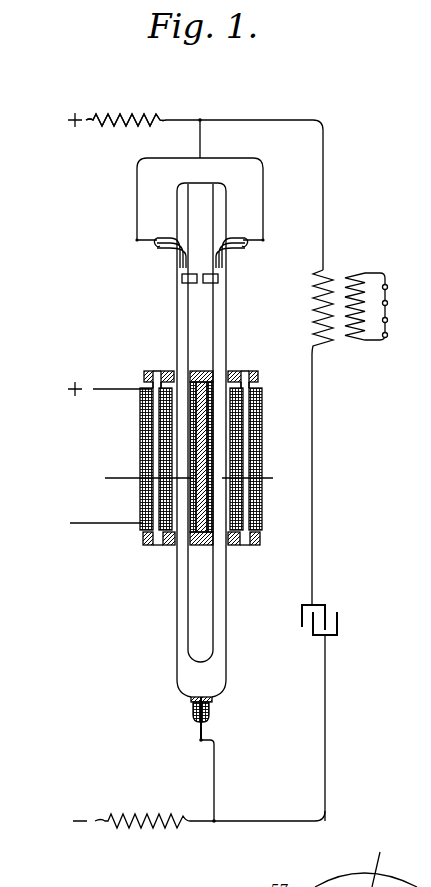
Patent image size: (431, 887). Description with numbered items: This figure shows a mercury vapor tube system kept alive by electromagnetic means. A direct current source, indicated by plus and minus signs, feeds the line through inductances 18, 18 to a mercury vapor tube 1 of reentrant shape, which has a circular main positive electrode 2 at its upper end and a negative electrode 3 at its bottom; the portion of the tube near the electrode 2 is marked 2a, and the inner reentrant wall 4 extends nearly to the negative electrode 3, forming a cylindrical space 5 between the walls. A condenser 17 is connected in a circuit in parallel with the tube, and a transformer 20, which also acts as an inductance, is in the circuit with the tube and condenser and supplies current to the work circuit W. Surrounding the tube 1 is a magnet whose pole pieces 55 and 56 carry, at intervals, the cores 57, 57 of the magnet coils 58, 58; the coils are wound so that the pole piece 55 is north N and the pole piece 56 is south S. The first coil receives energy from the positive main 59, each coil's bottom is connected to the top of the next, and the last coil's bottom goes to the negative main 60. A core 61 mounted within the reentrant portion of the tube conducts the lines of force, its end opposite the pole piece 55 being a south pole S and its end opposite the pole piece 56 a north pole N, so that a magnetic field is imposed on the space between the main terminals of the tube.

The mercury vapor tube 1 is at (227, 322).
The main positive electrode 2 is at (218, 278).
The electrode portions 2a is at (184, 482).
The negative electrode 3 is at (195, 701).
The inner tube 4 is at (200, 423).
The cylindrical space 5 is at (200, 294).
The condenser 17 is at (332, 713).
The inductances 18 is at (199, 472).
The transformer 20 is at (331, 430).
The winding W is at (380, 306).
The pole piece 55 is at (148, 370).
The pole piece 56 is at (150, 546).
The cores 57 is at (272, 388).
The magnet coils 58 is at (274, 435).
The positive main 59 is at (108, 393).
The negative main 60 is at (105, 526).
The core 61 is at (205, 370).
The north pole N is at (203, 546).
The south pole S is at (253, 555).